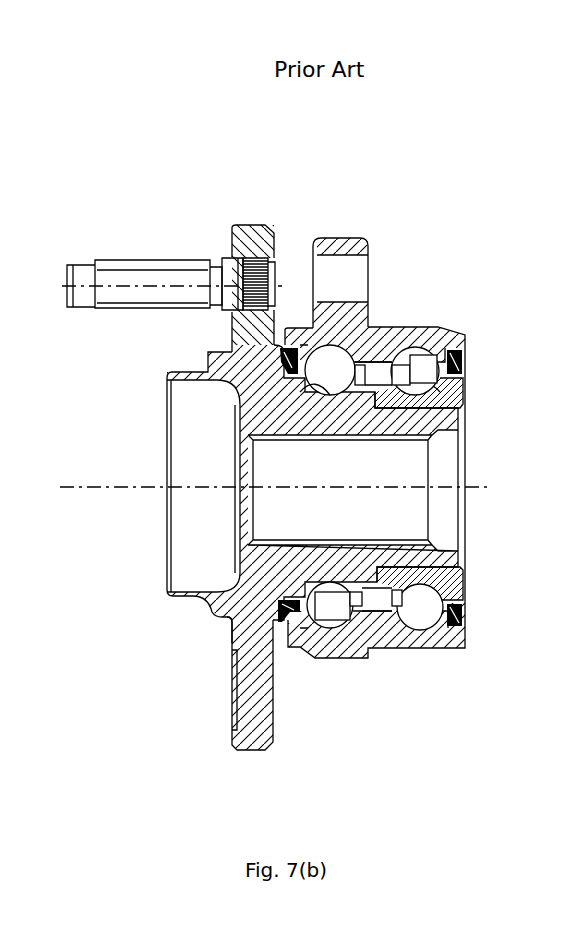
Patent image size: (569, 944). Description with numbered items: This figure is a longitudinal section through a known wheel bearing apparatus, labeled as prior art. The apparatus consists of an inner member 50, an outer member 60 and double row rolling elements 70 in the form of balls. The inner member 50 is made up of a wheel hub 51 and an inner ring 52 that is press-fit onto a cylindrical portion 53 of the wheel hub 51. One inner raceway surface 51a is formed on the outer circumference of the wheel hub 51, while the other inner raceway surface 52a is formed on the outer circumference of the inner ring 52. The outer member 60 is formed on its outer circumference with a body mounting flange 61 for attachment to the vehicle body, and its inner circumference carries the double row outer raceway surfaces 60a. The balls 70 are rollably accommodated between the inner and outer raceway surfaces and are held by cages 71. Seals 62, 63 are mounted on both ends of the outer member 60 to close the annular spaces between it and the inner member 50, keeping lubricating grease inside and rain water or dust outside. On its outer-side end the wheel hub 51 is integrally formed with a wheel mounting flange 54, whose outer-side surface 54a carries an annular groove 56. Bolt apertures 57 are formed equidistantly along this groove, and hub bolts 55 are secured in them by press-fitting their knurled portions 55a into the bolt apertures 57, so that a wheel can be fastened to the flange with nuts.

The inner member 50 is at (220, 432).
The wheel hub 51 is at (237, 402).
The inner raceway surface 51a is at (330, 380).
The inner ring 52 is at (457, 385).
The inner raceway surface 52a is at (425, 587).
The cylindrical portion 53 is at (425, 398).
The wheel mounting flange 54 is at (243, 230).
The outer-side surface 54a is at (229, 738).
The hub bolt 55 is at (107, 267).
The knurled portion 55a is at (253, 277).
The annular groove 56 is at (233, 672).
The bolt aperture 57 is at (247, 295).
The outer member 60 is at (390, 318).
The outer raceway surface 60a is at (318, 355).
The body mounting flange 61 is at (350, 243).
The seal 62 is at (270, 608).
The seal 63 is at (468, 620).
The rolling element 70 is at (332, 622).
The cage 71 is at (380, 640).